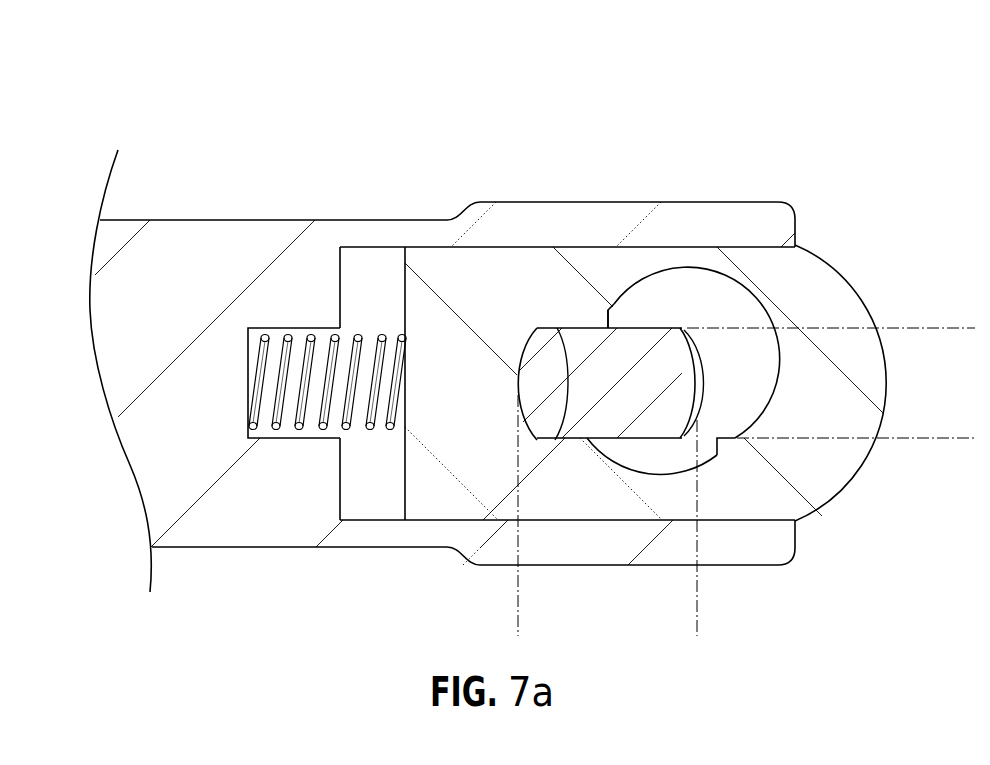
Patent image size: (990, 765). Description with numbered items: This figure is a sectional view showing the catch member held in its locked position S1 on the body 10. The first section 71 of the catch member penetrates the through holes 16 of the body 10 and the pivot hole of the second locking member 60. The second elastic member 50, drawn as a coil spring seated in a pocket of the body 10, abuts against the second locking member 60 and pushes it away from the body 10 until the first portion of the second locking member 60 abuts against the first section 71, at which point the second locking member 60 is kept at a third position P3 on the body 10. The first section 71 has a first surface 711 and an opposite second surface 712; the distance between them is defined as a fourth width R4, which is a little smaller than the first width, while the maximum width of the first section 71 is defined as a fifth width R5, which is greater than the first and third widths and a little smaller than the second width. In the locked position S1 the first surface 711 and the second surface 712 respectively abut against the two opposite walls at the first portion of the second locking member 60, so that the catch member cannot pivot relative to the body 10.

The body 10 is at (453, 217).
The second elastic member 50 is at (263, 337).
The first section 71 is at (609, 267).
The first surface 711 is at (557, 328).
The second surface 712 is at (640, 328).
The through holes 16 is at (683, 323).
The second locking member 60 is at (870, 312).
The locked position S1 is at (662, 322).
The third position P3 is at (405, 455).
The fourth width R4 is at (967, 328).
The maximum width R5 is at (697, 628).